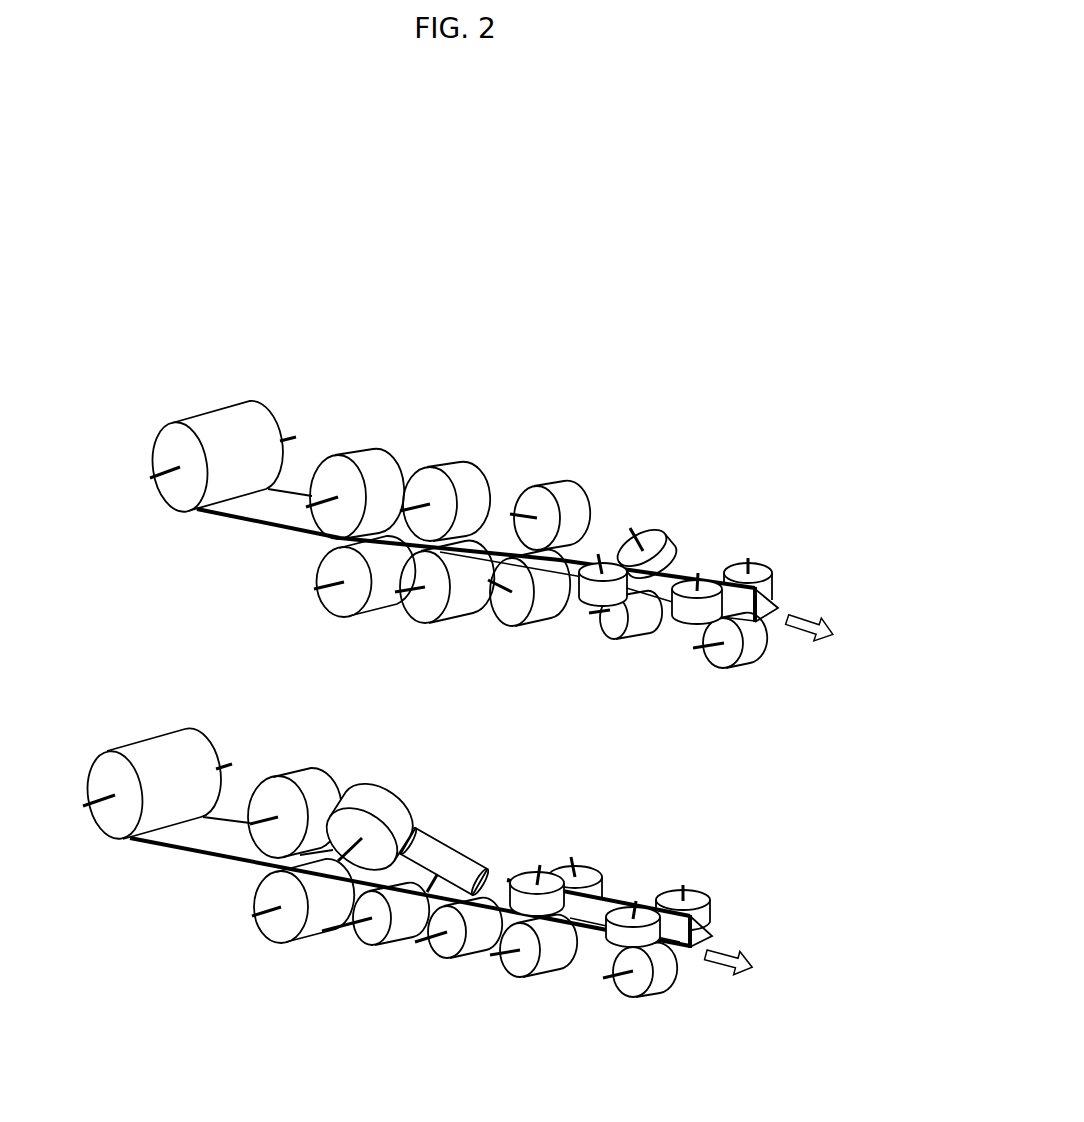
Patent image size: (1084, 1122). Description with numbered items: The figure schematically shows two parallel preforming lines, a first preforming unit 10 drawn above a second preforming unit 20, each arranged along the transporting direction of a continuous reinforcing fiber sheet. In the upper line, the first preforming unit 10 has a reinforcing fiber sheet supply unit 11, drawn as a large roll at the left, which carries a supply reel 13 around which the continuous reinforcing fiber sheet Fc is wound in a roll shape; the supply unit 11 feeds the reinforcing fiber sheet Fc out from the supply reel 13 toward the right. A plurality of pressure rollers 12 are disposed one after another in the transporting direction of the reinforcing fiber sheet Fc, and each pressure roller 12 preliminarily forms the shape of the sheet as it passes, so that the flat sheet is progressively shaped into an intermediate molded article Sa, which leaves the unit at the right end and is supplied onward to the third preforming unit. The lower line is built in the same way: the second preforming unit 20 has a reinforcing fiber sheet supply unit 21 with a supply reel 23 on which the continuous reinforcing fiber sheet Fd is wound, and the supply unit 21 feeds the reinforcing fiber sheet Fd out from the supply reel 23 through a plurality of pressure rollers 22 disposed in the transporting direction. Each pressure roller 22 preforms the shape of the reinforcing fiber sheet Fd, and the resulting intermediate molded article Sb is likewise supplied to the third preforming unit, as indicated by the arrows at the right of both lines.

The first preforming unit 10 is at (502, 432).
The reinforcing fiber sheet supply unit 11 is at (191, 418).
The pressure rollers 12 is at (372, 455).
The supply reel 13 is at (150, 474).
The second preforming unit 20 is at (475, 783).
The reinforcing fiber sheet supply unit 21 is at (150, 760).
The pressure rollers 22 is at (298, 777).
The supply reel 23 is at (90, 804).
The reinforcing fiber sheet Fc is at (273, 512).
The reinforcing fiber sheet Fd is at (202, 838).
The intermediate molded article Sa is at (767, 610).
The intermediate molded article Sb is at (699, 940).